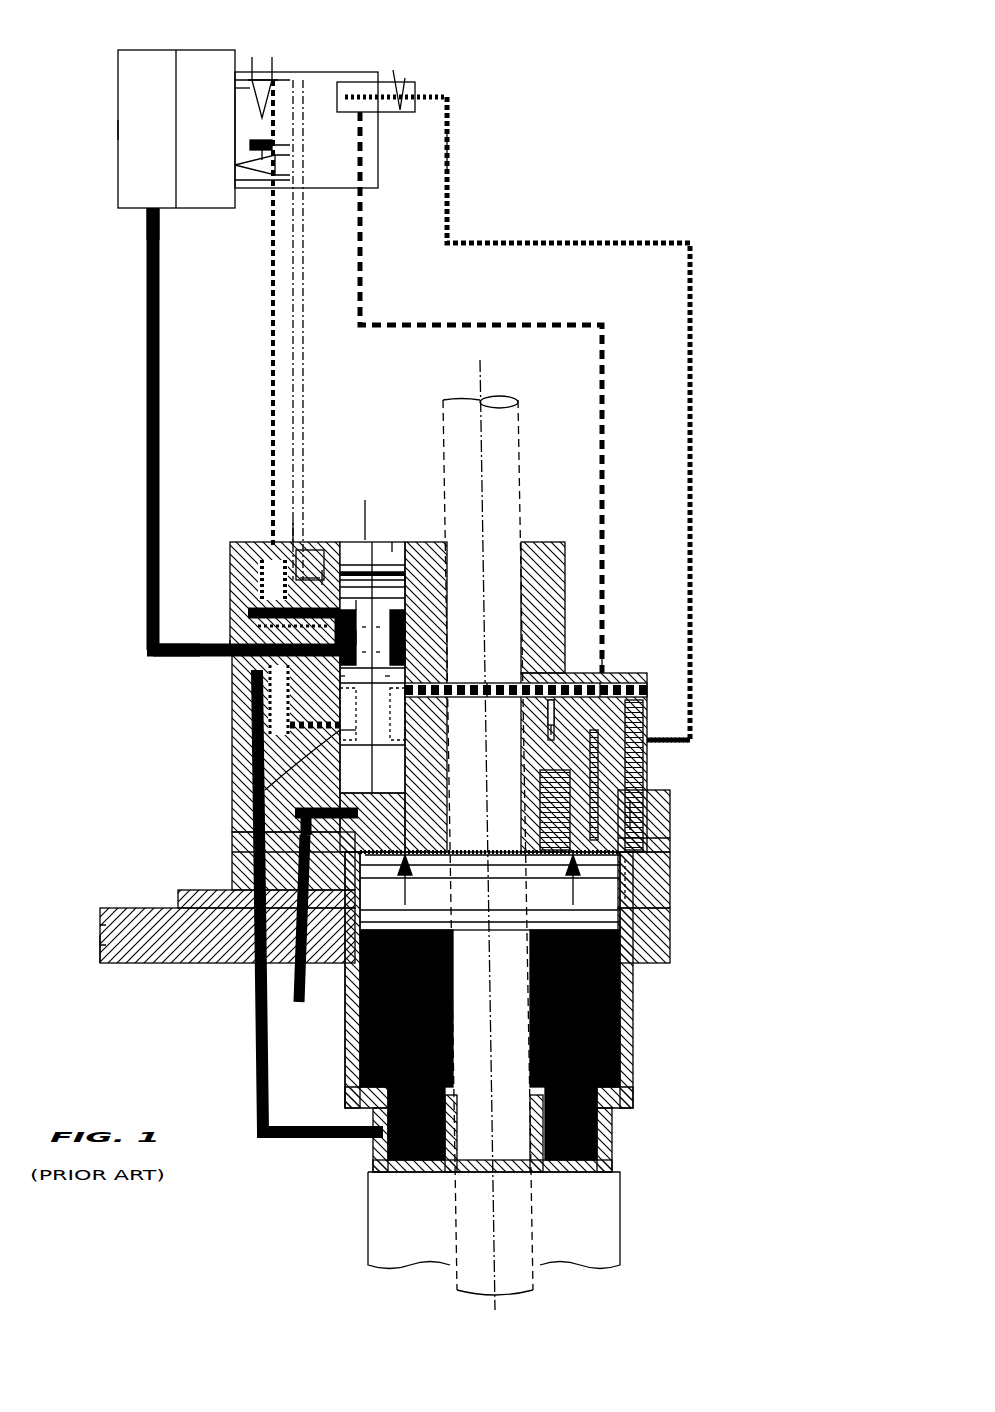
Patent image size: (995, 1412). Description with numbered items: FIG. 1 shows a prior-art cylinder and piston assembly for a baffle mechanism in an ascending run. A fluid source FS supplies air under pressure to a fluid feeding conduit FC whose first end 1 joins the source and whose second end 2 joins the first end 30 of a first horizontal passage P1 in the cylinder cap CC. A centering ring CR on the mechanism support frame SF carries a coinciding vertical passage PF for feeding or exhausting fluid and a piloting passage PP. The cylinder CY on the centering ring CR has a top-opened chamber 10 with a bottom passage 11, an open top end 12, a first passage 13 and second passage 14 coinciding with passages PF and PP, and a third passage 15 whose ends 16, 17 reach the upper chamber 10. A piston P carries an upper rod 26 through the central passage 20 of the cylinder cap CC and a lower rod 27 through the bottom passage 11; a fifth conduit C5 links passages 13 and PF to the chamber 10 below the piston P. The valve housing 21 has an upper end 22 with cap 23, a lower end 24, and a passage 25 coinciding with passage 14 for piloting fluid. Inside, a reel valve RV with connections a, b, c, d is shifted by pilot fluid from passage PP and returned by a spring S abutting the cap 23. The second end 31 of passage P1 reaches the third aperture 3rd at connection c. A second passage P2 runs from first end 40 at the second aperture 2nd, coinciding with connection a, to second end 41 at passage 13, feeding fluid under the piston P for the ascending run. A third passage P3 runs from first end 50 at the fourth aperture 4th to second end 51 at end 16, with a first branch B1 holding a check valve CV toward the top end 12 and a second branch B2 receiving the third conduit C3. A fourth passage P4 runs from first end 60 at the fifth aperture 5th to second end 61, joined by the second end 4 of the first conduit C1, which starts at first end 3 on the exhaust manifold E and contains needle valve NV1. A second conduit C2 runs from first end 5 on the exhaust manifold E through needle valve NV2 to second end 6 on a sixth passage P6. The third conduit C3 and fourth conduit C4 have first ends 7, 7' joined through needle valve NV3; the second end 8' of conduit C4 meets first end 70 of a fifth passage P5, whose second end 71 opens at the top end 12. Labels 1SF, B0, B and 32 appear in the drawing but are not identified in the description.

The exhaust manifold E is at (205, 75).
The fluid source FS is at (133, 133).
The first end of third conduit 7 is at (327, 130).
The first end of second conduit 5 is at (245, 88).
The second cartridge needle valve NV2 is at (263, 62).
The first end of first conduit 3 is at (268, 145).
The first cartridge needle valve NV1 is at (277, 162).
The third cartridge needle valve NV3 is at (400, 75).
The fourth conduit C4 is at (452, 208).
The first end of fourth conduit 7' is at (486, 150).
The third conduit C3 is at (363, 290).
The first conduit C1 is at (270, 405).
The second conduit C2 is at (300, 410).
The fluid feeding conduit FC is at (147, 410).
The first end of fluid feeding conduit 1 is at (160, 215).
The first upper piston rod 26 is at (500, 477).
The second end of fourth passage 61 is at (285, 548).
The first end of second passage 40 is at (280, 584).
The first horizontal passage P1 is at (250, 637).
The second passage P2 is at (262, 608).
The first end of first horizontal passage 30 is at (235, 645).
The second end of fluid feeding conduit 2 is at (222, 660).
The second end of first conduit 4 is at (273, 527).
The second end of second conduit 6 is at (300, 520).
The chamber B0 is at (303, 553).
The sixth passage P6 is at (310, 578).
The first branch B1 is at (322, 577).
The valve housing 21 is at (400, 768).
The first spring 1SF is at (330, 567).
The upper end of valve housing 22 is at (373, 520).
The cap 23 is at (392, 552).
The second aperture 2nd is at (330, 604).
The third aperture 3rd is at (361, 639).
The first connection a is at (360, 626).
The second connection b is at (374, 626).
The third connection c is at (360, 652).
The fourth connection d is at (374, 652).
The second end of first horizontal passage 31 is at (346, 674).
The fourth aperture 4th is at (378, 674).
The fifth aperture 5th is at (340, 730).
The spring S is at (435, 580).
The reel valve RV is at (418, 628).
The central passage 20 is at (525, 748).
The first end of third passage 50 is at (418, 690).
The third passage P3 is at (487, 690).
The passage 32 is at (551, 703).
The chamber B is at (604, 652).
The second branch B2 is at (607, 690).
The first end of fifth passage 70 is at (642, 727).
The second end of fourth conduit 8' is at (682, 750).
The fifth passage P5 is at (600, 775).
The internal check valve CV is at (548, 818).
The cylinder cap CC is at (625, 797).
The second end of third passage 51 is at (632, 810).
The first end of third passage 16 is at (637, 838).
The open top end 12 is at (640, 850).
The third passage 15 is at (640, 870).
The second end of third passage 17 is at (622, 898).
The first end of fourth passage 60 is at (245, 800).
The fourth passage P4 is at (280, 718).
The lower end of valve housing 24 is at (395, 800).
The passage 25 is at (326, 824).
The second end of second passage 41 is at (245, 822).
The first passage 13 is at (245, 855).
The centering ring CR is at (190, 898).
The first internal vertical passage PF is at (165, 925).
The mechanism support frame SF is at (170, 955).
The fifth conduit C5 is at (233, 1015).
The second vertical passage PP is at (298, 1010).
The second passage 14 is at (348, 893).
The second end of fifth passage 71 is at (560, 868).
The piston P is at (518, 900).
The top-opened chamber 10 is at (633, 1005).
The cylinder CY is at (632, 1055).
The centered bottom passage 11 is at (530, 1133).
The second lower piston rod 27 is at (515, 1215).